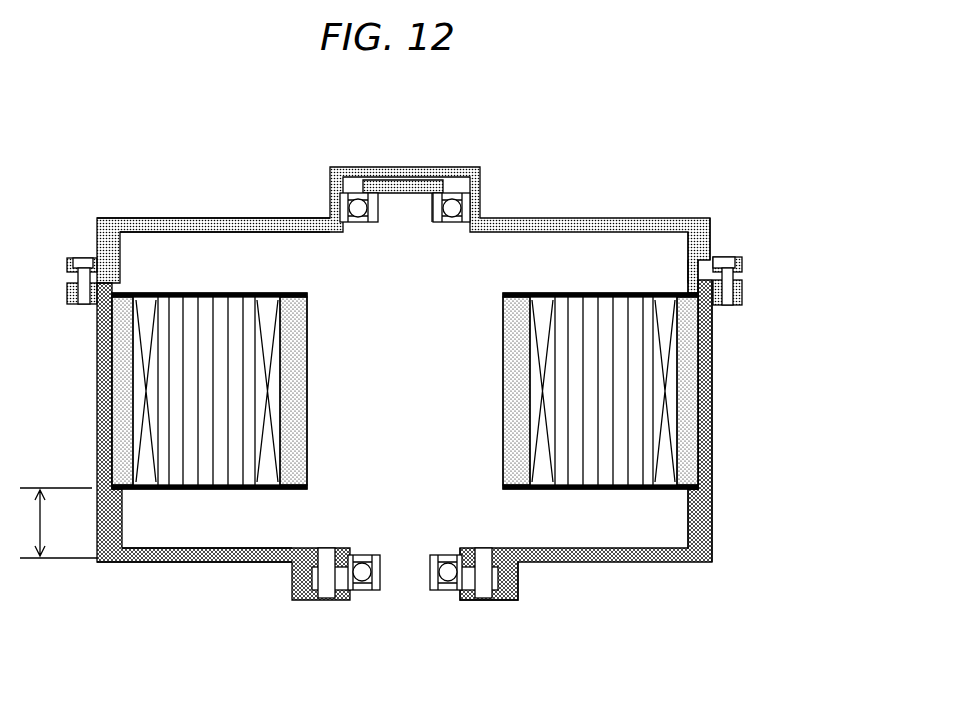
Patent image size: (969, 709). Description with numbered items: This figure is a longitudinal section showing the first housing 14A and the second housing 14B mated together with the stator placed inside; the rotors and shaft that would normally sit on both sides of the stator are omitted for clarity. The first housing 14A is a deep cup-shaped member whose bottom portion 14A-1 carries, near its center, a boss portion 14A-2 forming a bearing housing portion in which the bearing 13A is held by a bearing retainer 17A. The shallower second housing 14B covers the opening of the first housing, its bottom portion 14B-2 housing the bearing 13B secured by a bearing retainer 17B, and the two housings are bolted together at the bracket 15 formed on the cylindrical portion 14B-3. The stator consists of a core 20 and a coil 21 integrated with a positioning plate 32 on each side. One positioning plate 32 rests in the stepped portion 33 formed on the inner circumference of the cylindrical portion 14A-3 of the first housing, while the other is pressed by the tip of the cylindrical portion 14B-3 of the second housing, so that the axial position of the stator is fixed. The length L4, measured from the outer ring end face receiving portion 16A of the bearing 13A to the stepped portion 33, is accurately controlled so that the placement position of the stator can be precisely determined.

The second housing 14B is at (643, 220).
The bottom portion 14B-2 is at (223, 218).
The cylindrical portion 14B-3 is at (712, 236).
The bearing retainer 17B is at (411, 184).
The bearing 13B is at (464, 208).
The positioning plate 32 is at (695, 279).
The bracket 15 is at (743, 297).
The first housing 14A is at (158, 550).
The bottom portion 14A-1 is at (242, 560).
The boss portion 14A-2 is at (518, 575).
The cylindrical portion 14A-3 is at (712, 410).
The stepped portion 33 is at (693, 489).
The bearing retainer 17A is at (331, 601).
The outer ring end face receiving portion 16A is at (342, 548).
The bearing 13A is at (441, 590).
The core 20 is at (646, 391).
The coil 21 is at (670, 374).
The length L4 is at (58, 523).